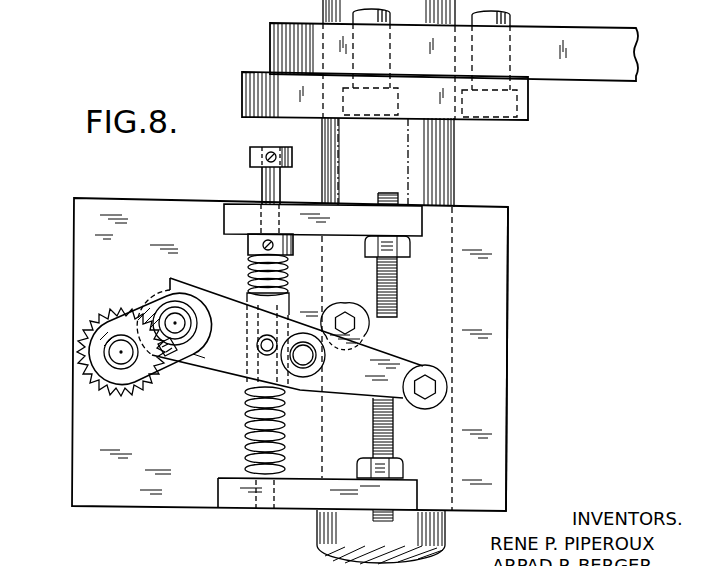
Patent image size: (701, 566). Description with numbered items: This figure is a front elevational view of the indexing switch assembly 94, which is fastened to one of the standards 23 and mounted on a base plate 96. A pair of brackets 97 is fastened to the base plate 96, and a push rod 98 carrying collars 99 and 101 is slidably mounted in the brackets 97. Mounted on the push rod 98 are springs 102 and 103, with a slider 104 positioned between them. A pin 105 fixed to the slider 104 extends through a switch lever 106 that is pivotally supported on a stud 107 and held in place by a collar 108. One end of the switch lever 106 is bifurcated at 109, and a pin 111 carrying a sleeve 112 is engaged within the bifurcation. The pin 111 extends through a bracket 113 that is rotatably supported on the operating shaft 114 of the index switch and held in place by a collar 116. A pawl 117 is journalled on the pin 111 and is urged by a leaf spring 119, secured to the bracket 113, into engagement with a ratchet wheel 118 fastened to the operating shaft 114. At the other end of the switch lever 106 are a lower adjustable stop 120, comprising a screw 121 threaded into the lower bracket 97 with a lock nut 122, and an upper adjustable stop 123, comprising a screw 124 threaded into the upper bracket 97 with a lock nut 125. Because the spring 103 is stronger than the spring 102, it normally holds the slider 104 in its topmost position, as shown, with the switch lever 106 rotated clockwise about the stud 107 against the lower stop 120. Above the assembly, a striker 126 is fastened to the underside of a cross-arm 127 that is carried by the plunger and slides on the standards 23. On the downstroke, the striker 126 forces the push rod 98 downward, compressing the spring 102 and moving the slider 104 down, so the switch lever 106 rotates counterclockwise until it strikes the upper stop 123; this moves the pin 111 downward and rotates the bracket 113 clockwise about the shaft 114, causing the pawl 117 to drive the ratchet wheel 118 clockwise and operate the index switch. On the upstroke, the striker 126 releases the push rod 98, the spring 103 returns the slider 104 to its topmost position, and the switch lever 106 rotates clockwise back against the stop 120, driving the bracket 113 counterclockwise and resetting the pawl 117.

The standard 23 is at (452, 160).
The indexing switch assembly 94 is at (64, 437).
The base plate 96 is at (507, 347).
The brackets 97 is at (300, 212).
The push rod 98 is at (262, 185).
The collar 99 is at (250, 155).
The collar 101 is at (248, 244).
The spring 102 is at (288, 278).
The spring 103 is at (245, 432).
The slider 104 is at (290, 305).
The pin 105 is at (258, 342).
The switch lever 106 is at (394, 362).
The stud 107 is at (312, 357).
The collar 108 is at (314, 372).
The bifurcation 109 is at (198, 303).
The pin 111 is at (172, 316).
The sleeve 112 is at (162, 316).
The bracket 113 is at (113, 327).
The operating shaft 114 is at (112, 352).
The collar 116 is at (112, 380).
The pawl 117 is at (170, 360).
The ratchet wheel 118 is at (133, 393).
The leaf spring 119 is at (190, 342).
The lower adjustable stop 120 is at (365, 440).
The screw 121 is at (393, 428).
The lock nut 122 is at (403, 466).
The upper adjustable stop 123 is at (416, 277).
The screw 124 is at (377, 280).
The lock nut 125 is at (366, 247).
The striker 126 is at (242, 88).
The cross-arm 127 is at (578, 35).